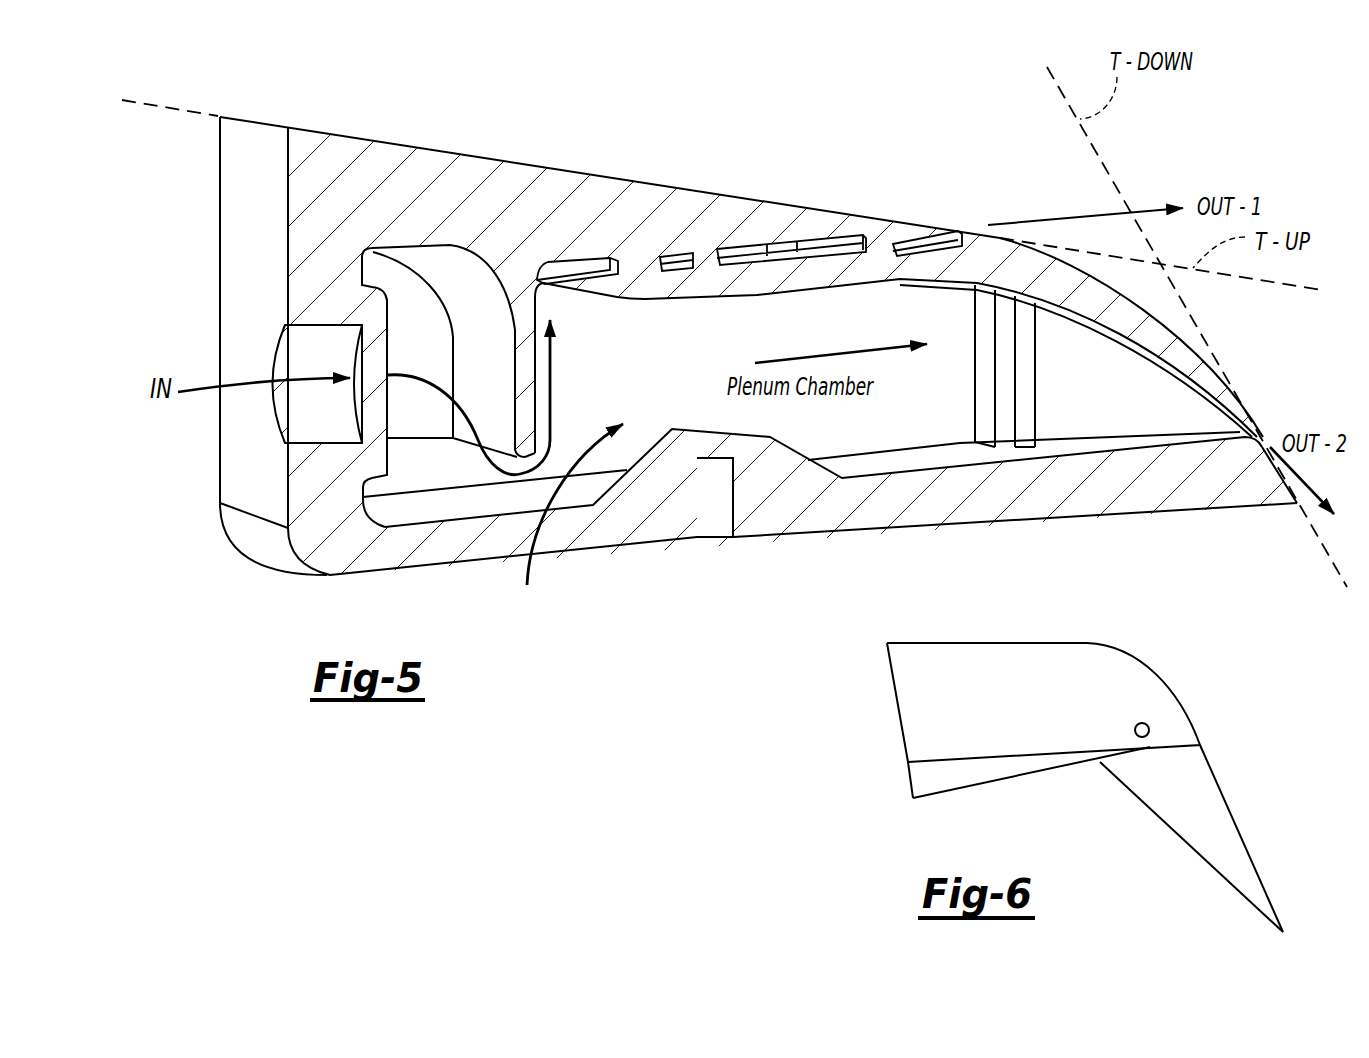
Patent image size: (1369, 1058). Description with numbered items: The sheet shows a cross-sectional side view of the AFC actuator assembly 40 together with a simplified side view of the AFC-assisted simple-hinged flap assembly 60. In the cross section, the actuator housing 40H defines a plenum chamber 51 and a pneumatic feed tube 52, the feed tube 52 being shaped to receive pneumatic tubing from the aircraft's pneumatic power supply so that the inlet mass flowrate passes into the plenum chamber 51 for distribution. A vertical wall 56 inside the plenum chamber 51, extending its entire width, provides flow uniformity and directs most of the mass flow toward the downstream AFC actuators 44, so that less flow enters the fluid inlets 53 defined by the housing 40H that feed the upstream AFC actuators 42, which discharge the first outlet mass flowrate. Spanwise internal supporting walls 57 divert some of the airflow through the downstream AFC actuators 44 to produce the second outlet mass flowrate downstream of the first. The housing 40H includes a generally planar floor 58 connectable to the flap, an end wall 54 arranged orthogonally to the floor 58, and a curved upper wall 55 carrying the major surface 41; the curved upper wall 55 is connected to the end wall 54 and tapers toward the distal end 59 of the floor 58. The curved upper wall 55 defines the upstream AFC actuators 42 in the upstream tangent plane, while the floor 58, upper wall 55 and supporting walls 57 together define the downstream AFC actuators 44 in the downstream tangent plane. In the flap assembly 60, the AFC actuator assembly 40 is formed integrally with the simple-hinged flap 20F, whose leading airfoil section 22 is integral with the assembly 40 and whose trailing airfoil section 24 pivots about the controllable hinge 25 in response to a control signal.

In FIG. 5, the AFC actuator assembly 40 is at (524, 72).
In FIG. 6, the AFC actuator assembly 40 is at (1030, 717).
In FIG. 5, the actuator housing 40H is at (327, 130).
In FIG. 5, the major surface 41 is at (430, 144).
In FIG. 5, the upstream AFC actuators 42 is at (738, 253).
In FIG. 5, the downstream AFC actuators 44 is at (1260, 433).
In FIG. 5, the plenum chamber 51 is at (569, 521).
In FIG. 5, the pneumatic feed tube 52 is at (325, 447).
In FIG. 5, the fluid inlets 53 is at (540, 281).
In FIG. 5, the end wall 54 is at (250, 206).
In FIG. 5, the curved upper wall 55 is at (522, 178).
In FIG. 5, the vertical wall 56 is at (500, 375).
In FIG. 5, the spanwise internal supporting walls 57 is at (1108, 409).
In FIG. 5, the floor 58 is at (970, 512).
In FIG. 5, the distal end 59 is at (1296, 510).
In FIG. 6, the simple-hinged flap assembly 60 is at (876, 718).
In FIG. 6, the leading airfoil section 22 is at (948, 778).
In FIG. 6, the trailing airfoil section 24 is at (1214, 830).
In FIG. 6, the controllable hinge 25 is at (1147, 724).
In FIG. 6, the simple-hinged flap 20F is at (1280, 790).